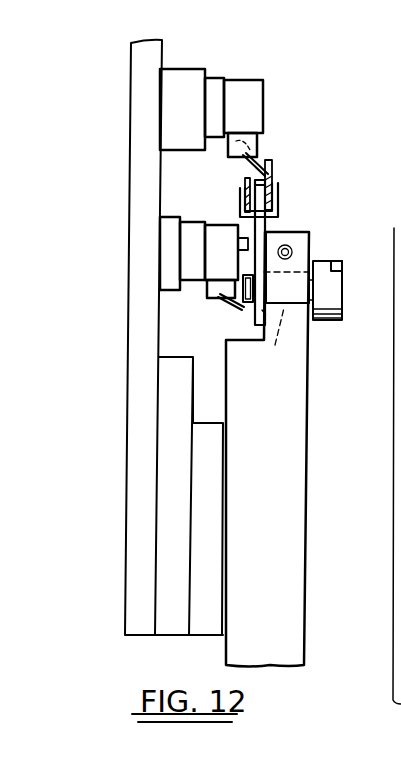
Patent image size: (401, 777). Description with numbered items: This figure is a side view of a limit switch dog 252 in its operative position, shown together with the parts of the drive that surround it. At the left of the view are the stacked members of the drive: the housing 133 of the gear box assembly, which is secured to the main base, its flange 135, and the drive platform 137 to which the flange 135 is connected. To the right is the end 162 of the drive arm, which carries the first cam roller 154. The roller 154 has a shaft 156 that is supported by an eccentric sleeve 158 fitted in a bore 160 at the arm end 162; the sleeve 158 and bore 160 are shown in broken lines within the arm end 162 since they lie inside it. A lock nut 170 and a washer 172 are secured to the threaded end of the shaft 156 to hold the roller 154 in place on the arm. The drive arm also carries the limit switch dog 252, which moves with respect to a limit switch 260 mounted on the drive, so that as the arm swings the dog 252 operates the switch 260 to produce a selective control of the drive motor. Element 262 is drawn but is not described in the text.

The housing 133 is at (200, 567).
The flange 135 is at (163, 390).
The drive platform 137 is at (135, 487).
The first cam roller 154 is at (345, 252).
The shaft 156 is at (318, 282).
The eccentric sleeve 158 is at (316, 240).
The bore 160 is at (281, 339).
The end of drive arm 162 is at (292, 350).
The lock nut 170 is at (248, 300).
The washer 172 is at (273, 238).
The limit switch dog 252 is at (290, 190).
The limit switch 260 is at (212, 270).
The block 262 is at (243, 92).